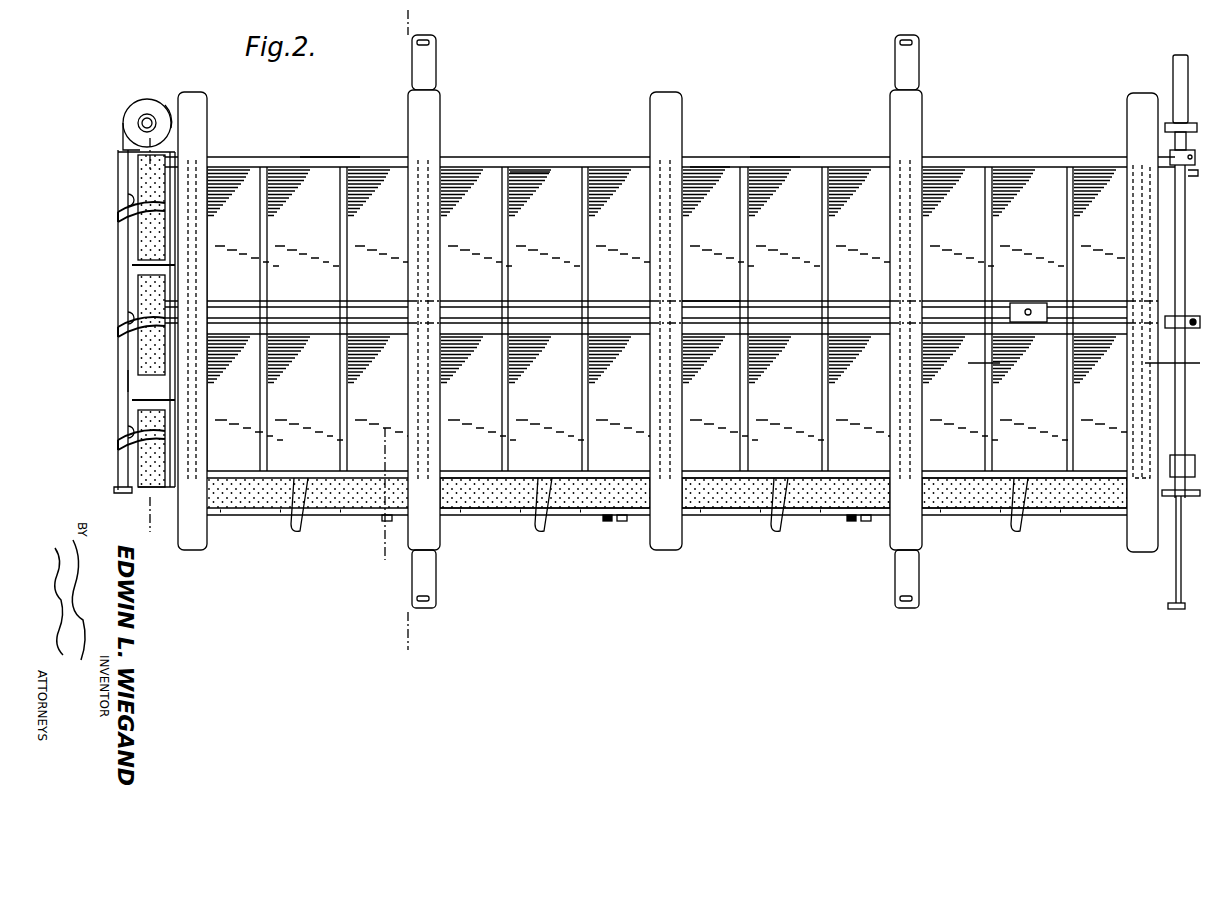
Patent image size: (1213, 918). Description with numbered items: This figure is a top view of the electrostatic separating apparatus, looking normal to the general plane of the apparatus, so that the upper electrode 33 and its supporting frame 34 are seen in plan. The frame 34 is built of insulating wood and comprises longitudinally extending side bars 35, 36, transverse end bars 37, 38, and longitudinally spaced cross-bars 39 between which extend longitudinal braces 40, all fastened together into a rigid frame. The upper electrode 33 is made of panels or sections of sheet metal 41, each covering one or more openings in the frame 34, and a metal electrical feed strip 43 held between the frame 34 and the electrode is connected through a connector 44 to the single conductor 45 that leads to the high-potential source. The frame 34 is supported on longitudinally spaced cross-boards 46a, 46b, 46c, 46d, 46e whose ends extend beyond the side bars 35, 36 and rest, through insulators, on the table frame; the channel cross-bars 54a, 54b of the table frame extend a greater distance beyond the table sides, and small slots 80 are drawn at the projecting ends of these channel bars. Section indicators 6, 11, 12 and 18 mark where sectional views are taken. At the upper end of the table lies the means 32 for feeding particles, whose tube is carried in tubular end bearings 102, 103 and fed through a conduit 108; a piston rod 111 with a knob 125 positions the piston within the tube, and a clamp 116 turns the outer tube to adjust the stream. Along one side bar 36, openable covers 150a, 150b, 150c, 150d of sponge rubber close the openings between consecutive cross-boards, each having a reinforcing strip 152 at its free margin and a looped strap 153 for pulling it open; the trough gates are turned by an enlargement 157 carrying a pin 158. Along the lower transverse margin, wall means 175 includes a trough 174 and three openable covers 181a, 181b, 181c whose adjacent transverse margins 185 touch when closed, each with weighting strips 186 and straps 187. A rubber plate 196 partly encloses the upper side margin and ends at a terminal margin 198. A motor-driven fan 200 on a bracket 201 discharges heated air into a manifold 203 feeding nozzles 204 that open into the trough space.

The section line 6- 6 is at (968, 367).
The section line 11- 11 is at (404, 20).
The section line 12- 12 is at (382, 447).
The section line 18- 18 is at (150, 151).
The means for feeding material particles 32 is at (1178, 208).
The upper electrode 33 is at (546, 188).
The supporting frame 34 is at (489, 159).
The side bar 35 is at (770, 162).
The side bar 36 is at (215, 470).
The end bar 37 is at (196, 280).
The end bar 38 is at (1150, 237).
The cross-bars 39 is at (267, 283).
The longitudinal braces 40 is at (540, 302).
The sheet metal sections 41 is at (622, 195).
The electrical feed strip 43 is at (702, 302).
The connector 44 is at (1013, 304).
The conductor 45 is at (1030, 309).
The cross-board 46a is at (196, 103).
The cross-board 46b is at (432, 105).
The cross-board 46c is at (672, 118).
The cross-board 46d is at (912, 112).
The cross-board 46e is at (1135, 110).
The channel cross-bar 54a is at (432, 565).
The channel cross-bar 54b is at (914, 567).
The pin slot 80 is at (430, 41).
The tubular end bearing 102 is at (1170, 157).
The tubular end bearing 103 is at (1165, 495).
The conduit 108 is at (1176, 70).
The piston rod 111 is at (1175, 578).
The clamp 116 is at (1180, 316).
The knob 125 is at (1172, 607).
The openable cover 150a is at (252, 495).
The openable cover 150b is at (505, 495).
The openable cover 150c is at (742, 500).
The openable cover 150d is at (982, 495).
The reinforcing strip 152 is at (316, 476).
The looped strap 153 is at (298, 530).
The enlargement 157 is at (382, 519).
The pin 158 is at (607, 521).
The trough 174 is at (127, 380).
The wall means 175 is at (127, 290).
The openable cover 181a is at (150, 243).
The openable cover 181b is at (150, 358).
The openable cover 181c is at (150, 468).
The transverse margins 185 is at (160, 265).
The weighting and reinforcing strips 186 is at (175, 160).
The straps 187 is at (118, 216).
The plate 196 is at (345, 140).
The terminal margin 198 is at (700, 162).
The motor-driven fan 200 is at (124, 110).
The bracket 201 is at (162, 100).
The manifold 203 is at (118, 182).
The nozzles 204 is at (126, 200).